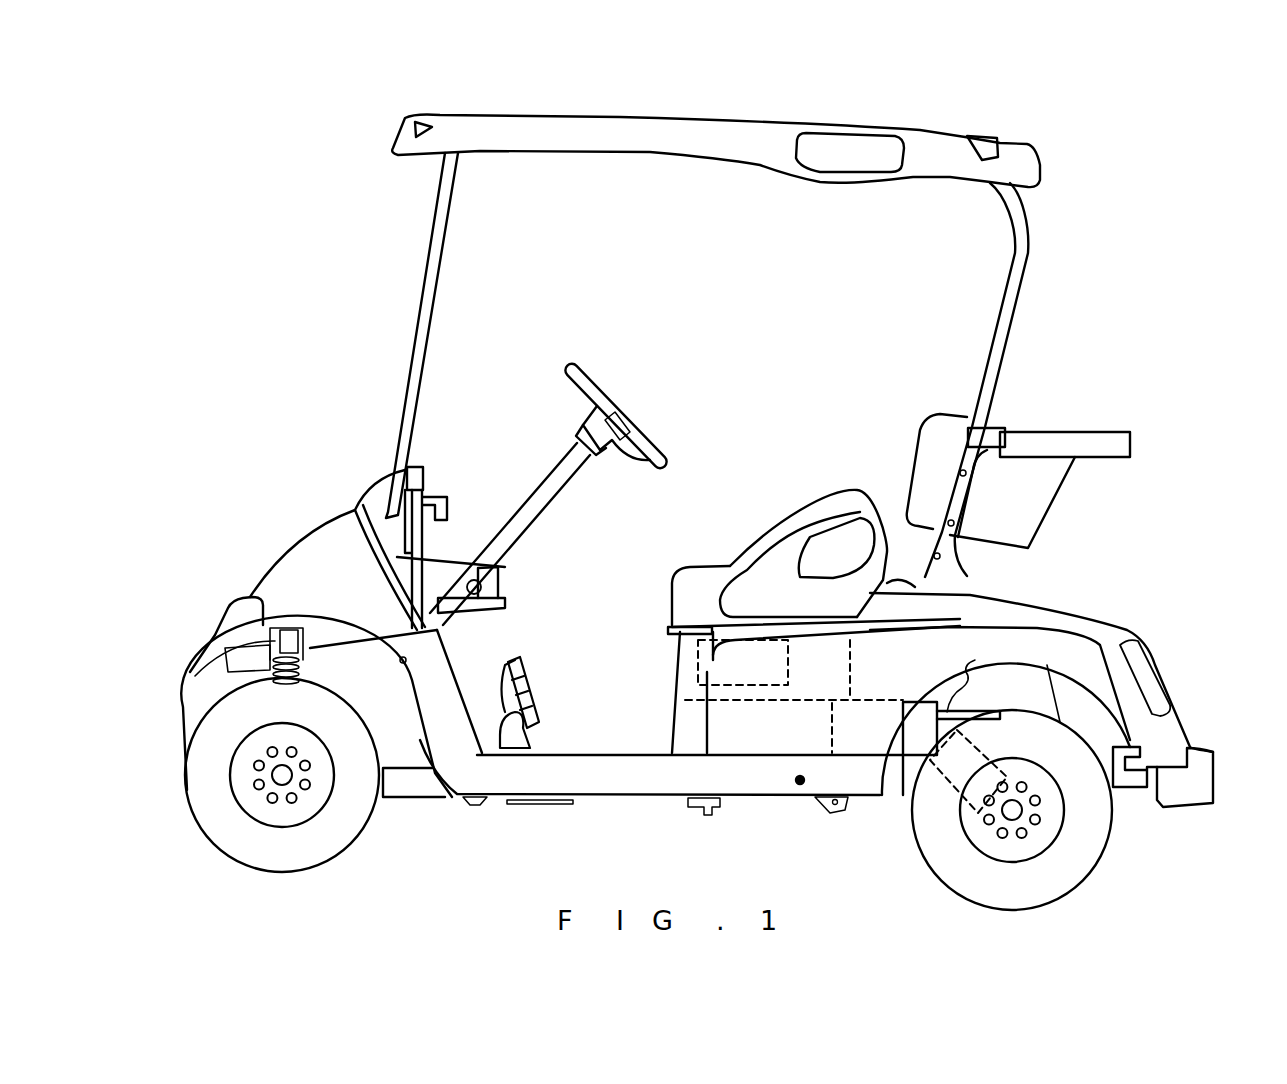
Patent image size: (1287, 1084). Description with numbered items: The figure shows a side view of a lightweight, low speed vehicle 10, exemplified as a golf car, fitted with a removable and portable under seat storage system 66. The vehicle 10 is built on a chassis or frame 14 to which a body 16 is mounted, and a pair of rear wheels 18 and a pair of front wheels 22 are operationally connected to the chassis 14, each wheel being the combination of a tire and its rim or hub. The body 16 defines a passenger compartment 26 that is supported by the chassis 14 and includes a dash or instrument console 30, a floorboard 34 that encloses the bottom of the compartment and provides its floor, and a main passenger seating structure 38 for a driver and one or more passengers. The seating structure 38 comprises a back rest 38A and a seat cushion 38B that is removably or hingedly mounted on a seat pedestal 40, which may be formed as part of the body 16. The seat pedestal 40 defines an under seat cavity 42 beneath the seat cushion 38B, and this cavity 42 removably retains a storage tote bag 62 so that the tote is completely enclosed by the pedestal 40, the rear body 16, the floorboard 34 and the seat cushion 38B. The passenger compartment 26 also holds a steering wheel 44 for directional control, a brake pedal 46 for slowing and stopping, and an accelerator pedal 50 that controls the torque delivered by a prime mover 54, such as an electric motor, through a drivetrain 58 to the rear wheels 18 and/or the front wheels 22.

The lightweight vehicle 10 is at (1103, 128).
The chassis or frame 14 is at (415, 785).
The body 16 is at (284, 554).
The rear wheels 18 is at (1085, 840).
The front wheels 22 is at (208, 803).
The passenger compartment 26 is at (777, 271).
The dash or instrument console 30 is at (418, 470).
The floorboard 34 is at (455, 668).
The main passenger seating structure 38 is at (749, 502).
The back rest 38A is at (928, 418).
The seat cushion 38B is at (698, 588).
The seat pedestal 40 is at (668, 632).
The under seat cavity 42 is at (692, 692).
The steering wheel 44 is at (575, 365).
The brake pedal 46 is at (520, 690).
The accelerator pedal 50 is at (540, 720).
The prime mover 54 is at (913, 740).
The drivetrain 58 is at (983, 750).
The storage tote bag 62 is at (738, 668).
The under seat storage system 66 is at (791, 712).